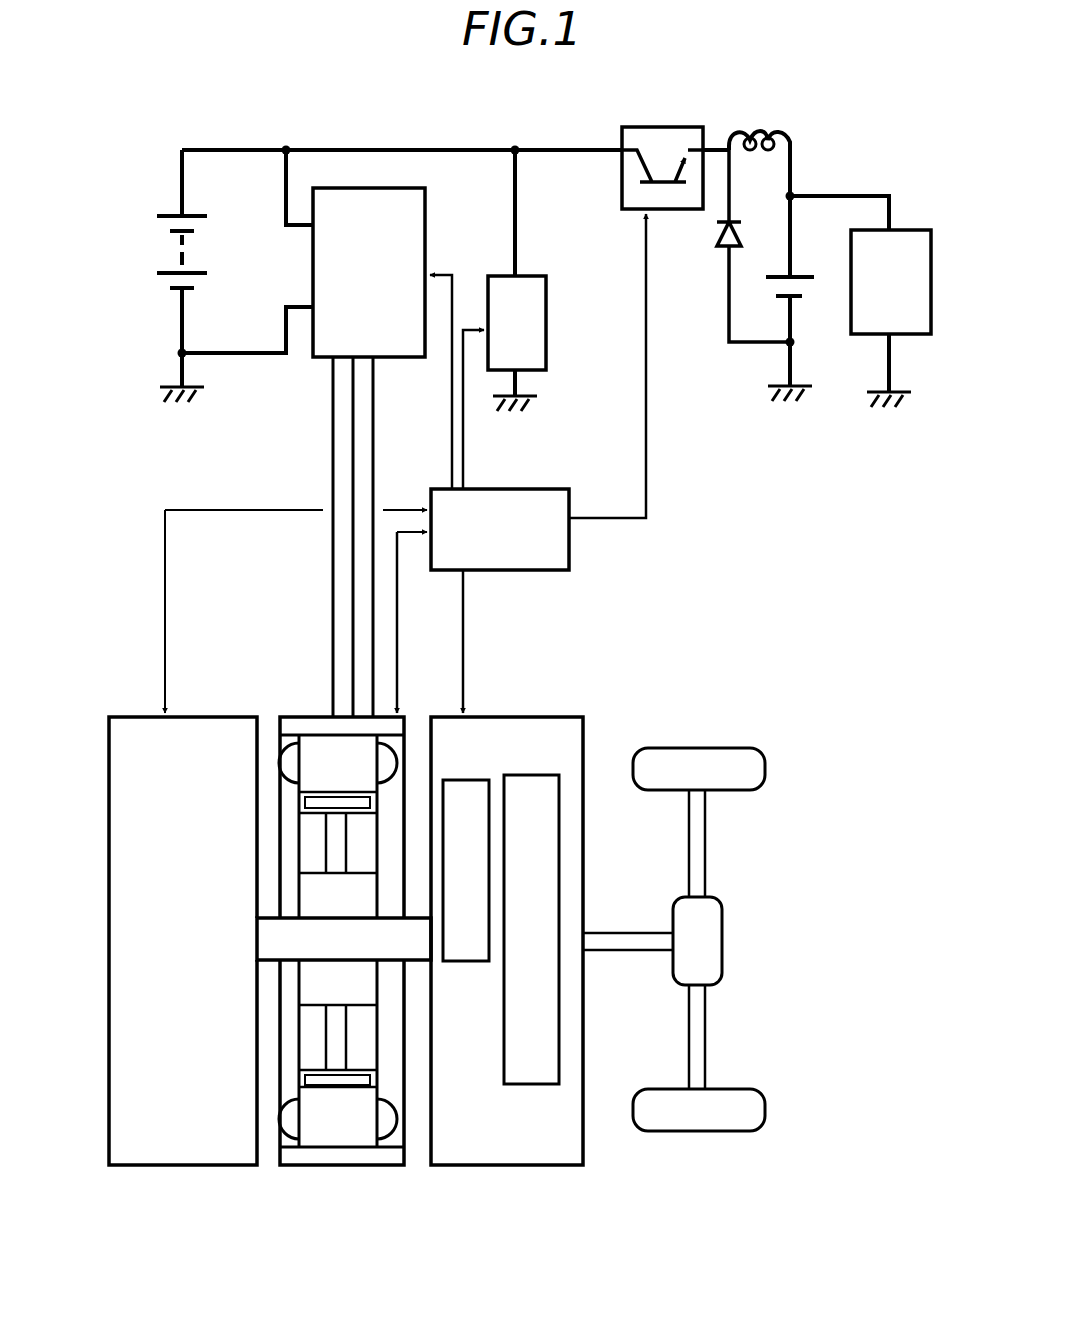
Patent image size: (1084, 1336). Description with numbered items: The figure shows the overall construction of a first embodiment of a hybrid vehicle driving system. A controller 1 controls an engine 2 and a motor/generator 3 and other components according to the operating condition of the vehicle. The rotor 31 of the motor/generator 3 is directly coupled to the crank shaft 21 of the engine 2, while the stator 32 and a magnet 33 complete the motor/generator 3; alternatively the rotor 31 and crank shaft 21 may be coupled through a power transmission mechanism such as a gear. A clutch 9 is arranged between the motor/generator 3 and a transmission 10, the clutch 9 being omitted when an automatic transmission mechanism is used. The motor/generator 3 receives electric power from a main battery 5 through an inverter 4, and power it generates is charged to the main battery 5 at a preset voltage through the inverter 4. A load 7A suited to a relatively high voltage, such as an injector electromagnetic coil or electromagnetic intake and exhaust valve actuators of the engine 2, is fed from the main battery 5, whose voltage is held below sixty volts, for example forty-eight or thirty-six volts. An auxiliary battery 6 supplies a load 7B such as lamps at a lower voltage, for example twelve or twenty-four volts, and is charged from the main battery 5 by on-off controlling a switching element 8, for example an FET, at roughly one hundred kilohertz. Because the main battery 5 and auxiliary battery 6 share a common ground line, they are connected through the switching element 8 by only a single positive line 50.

The controller 1 is at (540, 489).
The engine 2 is at (188, 1147).
The motor/generator 3 is at (338, 983).
The inverter 4 is at (313, 245).
The main battery 5 is at (162, 278).
The auxiliary battery 6 is at (800, 298).
The load 7A is at (547, 331).
The load 7B is at (850, 272).
The switching element 8 is at (620, 180).
The clutch 9 is at (469, 962).
The transmission 10 is at (598, 985).
The crank shaft 21 is at (264, 945).
The rotor 31 is at (313, 992).
The stator 32 is at (343, 1133).
The magnet 33 is at (333, 1078).
The positive line 50 is at (460, 153).